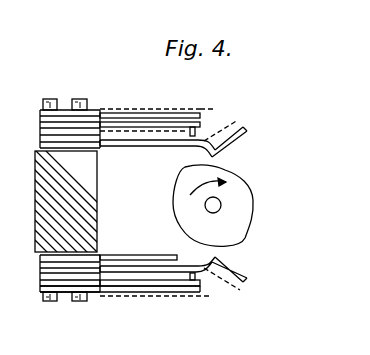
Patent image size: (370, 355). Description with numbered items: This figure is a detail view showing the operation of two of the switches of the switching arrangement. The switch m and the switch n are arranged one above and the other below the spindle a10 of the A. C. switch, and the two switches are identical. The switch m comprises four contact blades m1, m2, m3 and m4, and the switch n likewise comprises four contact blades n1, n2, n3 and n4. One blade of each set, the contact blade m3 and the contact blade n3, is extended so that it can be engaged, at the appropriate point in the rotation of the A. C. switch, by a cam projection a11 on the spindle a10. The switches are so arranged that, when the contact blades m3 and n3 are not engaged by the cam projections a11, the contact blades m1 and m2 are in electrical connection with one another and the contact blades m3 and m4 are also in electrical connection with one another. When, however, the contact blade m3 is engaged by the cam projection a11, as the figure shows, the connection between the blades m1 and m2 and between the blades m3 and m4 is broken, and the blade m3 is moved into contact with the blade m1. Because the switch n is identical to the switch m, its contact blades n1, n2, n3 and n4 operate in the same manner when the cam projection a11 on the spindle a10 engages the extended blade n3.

The switch m is at (38, 120).
The contact blade m1 is at (113, 116).
The contact blade m2 is at (152, 125).
The contact blade m3 is at (247, 137).
The contact blade m4 is at (130, 150).
The spindle a10 is at (219, 201).
The cam projection a11 is at (176, 172).
The switch n is at (38, 268).
The contact blade n1 is at (157, 292).
The contact blade n2 is at (124, 281).
The contact blade n3 is at (206, 272).
The contact blade n4 is at (132, 243).